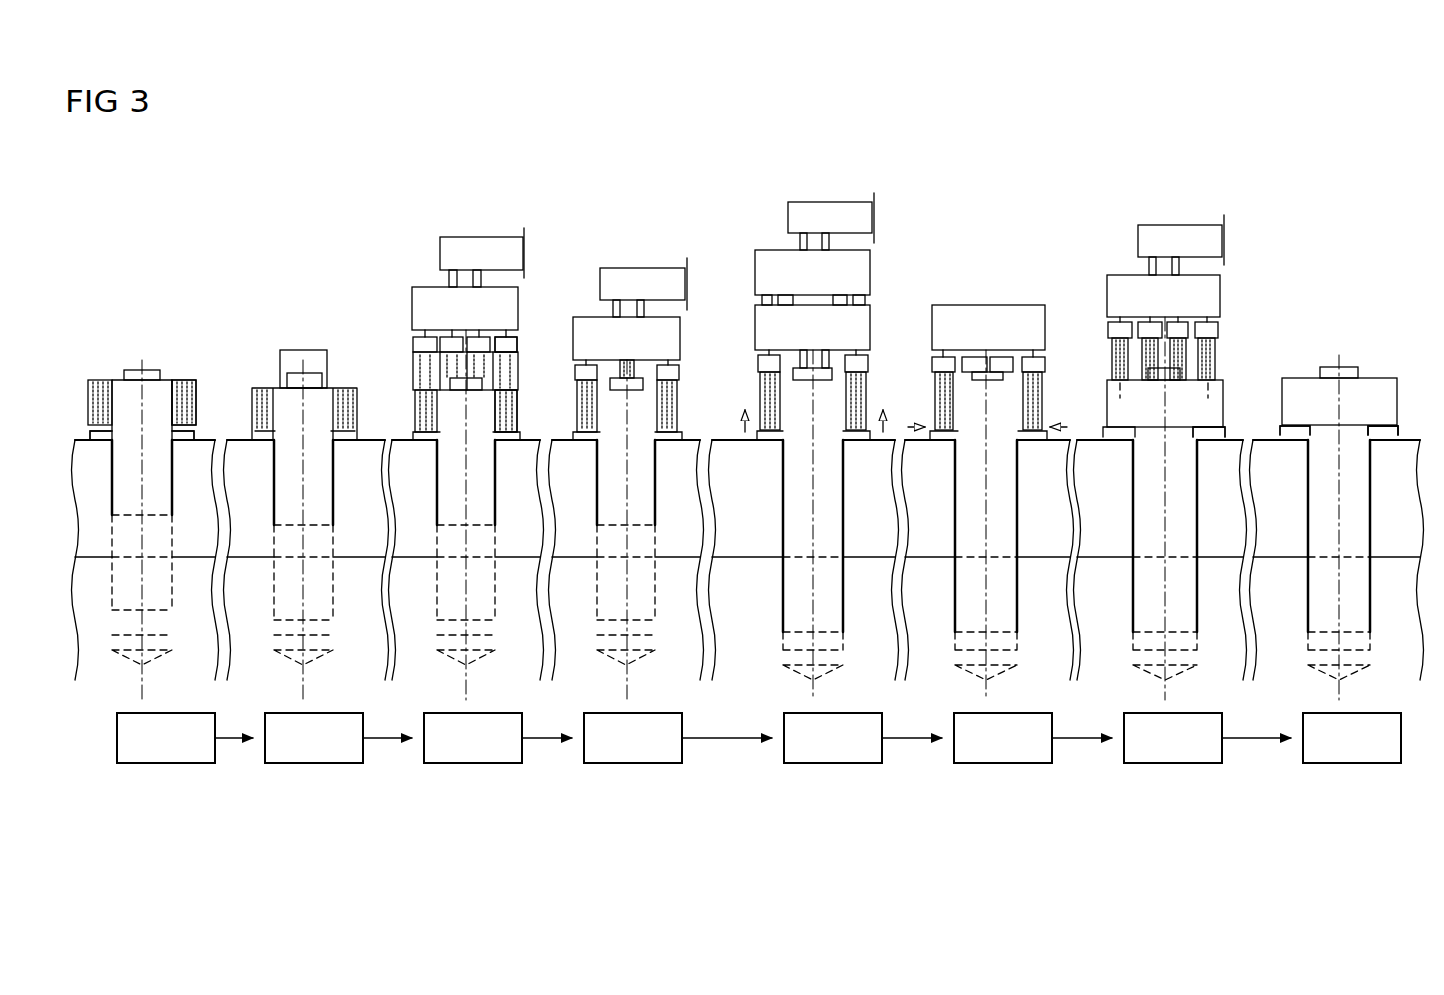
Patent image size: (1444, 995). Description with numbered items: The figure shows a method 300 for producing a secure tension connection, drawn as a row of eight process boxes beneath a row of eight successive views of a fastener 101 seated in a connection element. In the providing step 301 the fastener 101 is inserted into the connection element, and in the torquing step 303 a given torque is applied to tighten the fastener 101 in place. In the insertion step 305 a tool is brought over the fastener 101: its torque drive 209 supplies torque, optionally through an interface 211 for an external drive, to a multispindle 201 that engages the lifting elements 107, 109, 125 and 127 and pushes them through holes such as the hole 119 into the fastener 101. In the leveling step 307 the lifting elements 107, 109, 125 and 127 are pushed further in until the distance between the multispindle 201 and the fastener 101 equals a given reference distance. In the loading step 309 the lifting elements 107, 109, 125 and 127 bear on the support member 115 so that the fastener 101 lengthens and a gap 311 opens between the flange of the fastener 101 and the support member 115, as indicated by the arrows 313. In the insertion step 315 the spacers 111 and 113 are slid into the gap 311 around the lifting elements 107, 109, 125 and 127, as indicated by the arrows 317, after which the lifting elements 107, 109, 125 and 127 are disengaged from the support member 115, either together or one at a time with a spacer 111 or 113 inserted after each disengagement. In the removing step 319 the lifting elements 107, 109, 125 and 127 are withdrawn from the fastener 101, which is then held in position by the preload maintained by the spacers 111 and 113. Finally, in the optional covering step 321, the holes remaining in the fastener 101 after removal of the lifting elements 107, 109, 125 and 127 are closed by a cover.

The method 300 is at (1328, 168).
The fastener 101 is at (118, 383).
The hole 119 is at (182, 382).
The support member 115 is at (188, 435).
The torque drive 209 is at (446, 255).
The multispindle 201 is at (420, 312).
The interface 211 is at (776, 259).
The lifting element 107 is at (416, 358).
The lifting element 125 is at (448, 366).
The lifting element 109 is at (505, 365).
The lifting element 127 is at (483, 368).
The gap 311 is at (755, 420).
The arrows 313 is at (748, 437).
The arrows 317 is at (928, 438).
The spacer 113 is at (1105, 429).
The spacer 111 is at (1214, 434).
The providing step 301 is at (165, 765).
The torquing step 303 is at (313, 765).
The insertion step 305 is at (472, 765).
The leveling step 307 is at (632, 765).
The loading step 309 is at (832, 765).
The insertion step 315 is at (1002, 765).
The removing step 319 is at (1172, 765).
The covering step 321 is at (1350, 765).